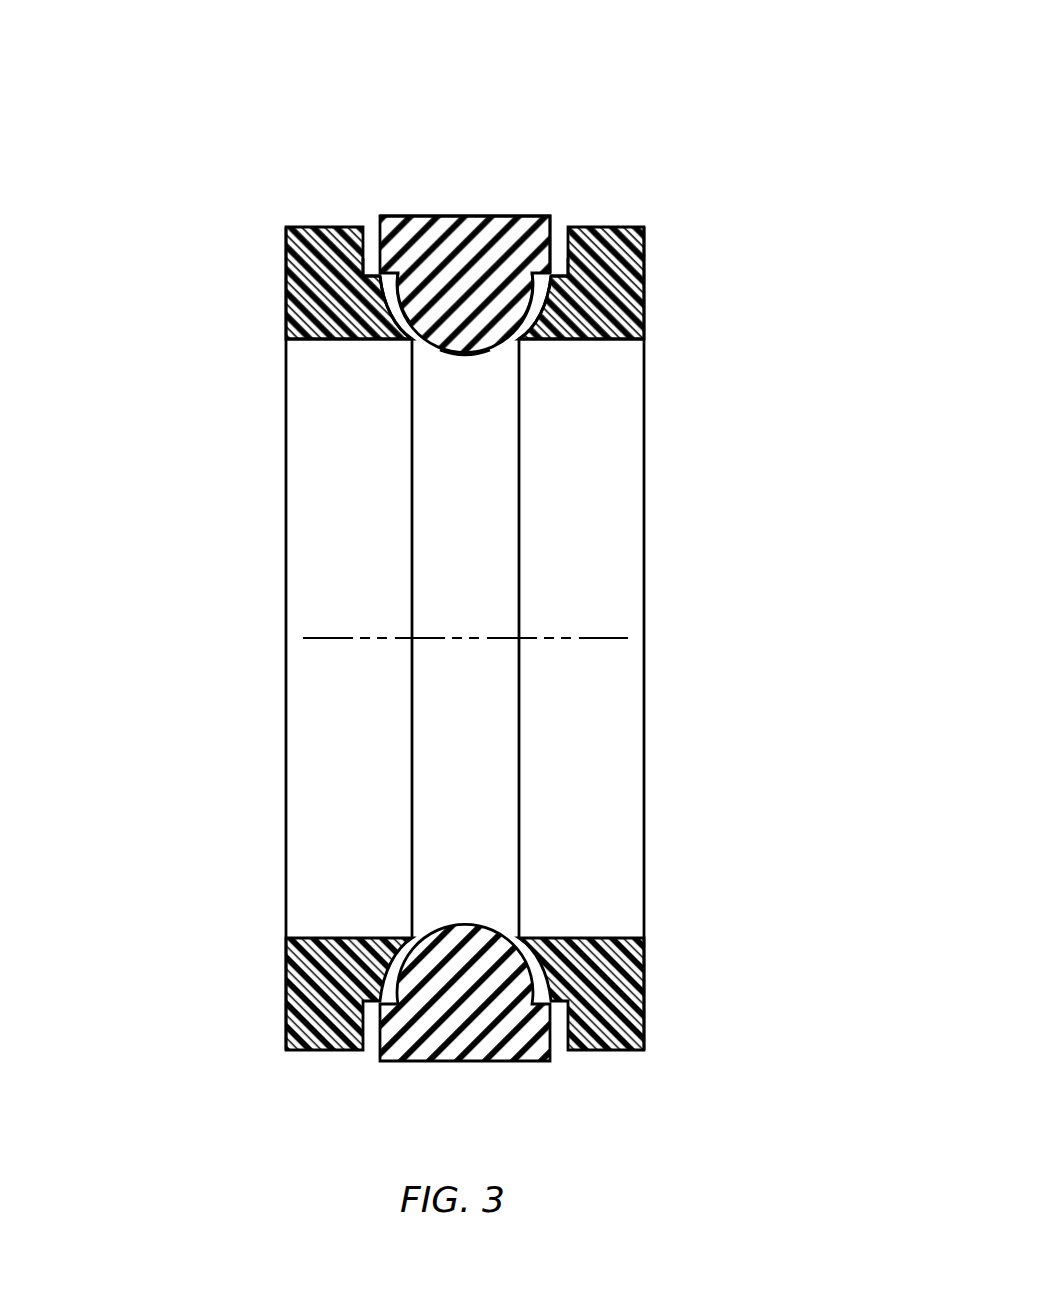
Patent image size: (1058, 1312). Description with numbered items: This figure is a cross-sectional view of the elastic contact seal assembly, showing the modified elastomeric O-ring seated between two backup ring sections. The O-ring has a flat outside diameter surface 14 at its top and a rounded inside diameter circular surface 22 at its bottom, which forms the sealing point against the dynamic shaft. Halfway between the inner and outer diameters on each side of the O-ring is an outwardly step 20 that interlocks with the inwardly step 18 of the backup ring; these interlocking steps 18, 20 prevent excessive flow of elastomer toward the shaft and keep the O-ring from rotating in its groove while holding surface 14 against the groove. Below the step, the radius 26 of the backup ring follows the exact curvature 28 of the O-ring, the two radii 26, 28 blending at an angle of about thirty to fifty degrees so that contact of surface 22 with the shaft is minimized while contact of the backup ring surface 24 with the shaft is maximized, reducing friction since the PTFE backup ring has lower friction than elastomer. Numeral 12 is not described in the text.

The housing / outer ring 12 is at (646, 287).
The flat outside diameter surface 14 is at (443, 218).
The inwardly step 18 is at (370, 275).
The outwardly step 20 is at (405, 240).
The rounded inside diameter circular surface 22 is at (468, 357).
The surface of backup ring 24 is at (330, 340).
The radius of backup ring 26 is at (395, 305).
The curvature of modified O-ring 28 is at (407, 313).